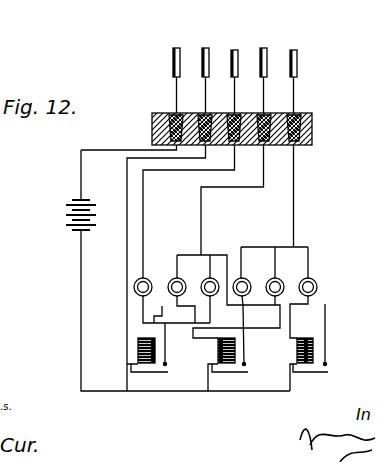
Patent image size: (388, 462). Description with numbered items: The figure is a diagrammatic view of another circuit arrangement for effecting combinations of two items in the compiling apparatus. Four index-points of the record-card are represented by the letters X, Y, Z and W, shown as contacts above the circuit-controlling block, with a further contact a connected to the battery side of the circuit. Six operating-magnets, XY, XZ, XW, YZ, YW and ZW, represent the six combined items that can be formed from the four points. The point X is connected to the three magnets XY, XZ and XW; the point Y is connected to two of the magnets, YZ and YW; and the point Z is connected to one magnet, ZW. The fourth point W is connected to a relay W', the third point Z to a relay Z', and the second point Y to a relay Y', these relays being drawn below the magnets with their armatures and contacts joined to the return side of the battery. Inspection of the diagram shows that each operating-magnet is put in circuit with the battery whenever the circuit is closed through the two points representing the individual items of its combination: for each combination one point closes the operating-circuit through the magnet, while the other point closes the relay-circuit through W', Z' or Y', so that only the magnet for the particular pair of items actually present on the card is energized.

The battery terminal contact a is at (172, 64).
The index-point W is at (169, 207).
The index-point Z is at (193, 151).
The index-point Y is at (228, 181).
The index-point X is at (274, 135).
The operating-magnet ZW is at (168, 296).
The operating-magnet YW is at (174, 289).
The operating-magnet YZ is at (206, 289).
The operating-magnet XW is at (248, 276).
The operating-magnet XZ is at (280, 276).
The operating-magnet XY is at (309, 292).
The relay W' is at (142, 347).
The relay Z' is at (224, 348).
The relay Y' is at (305, 347).